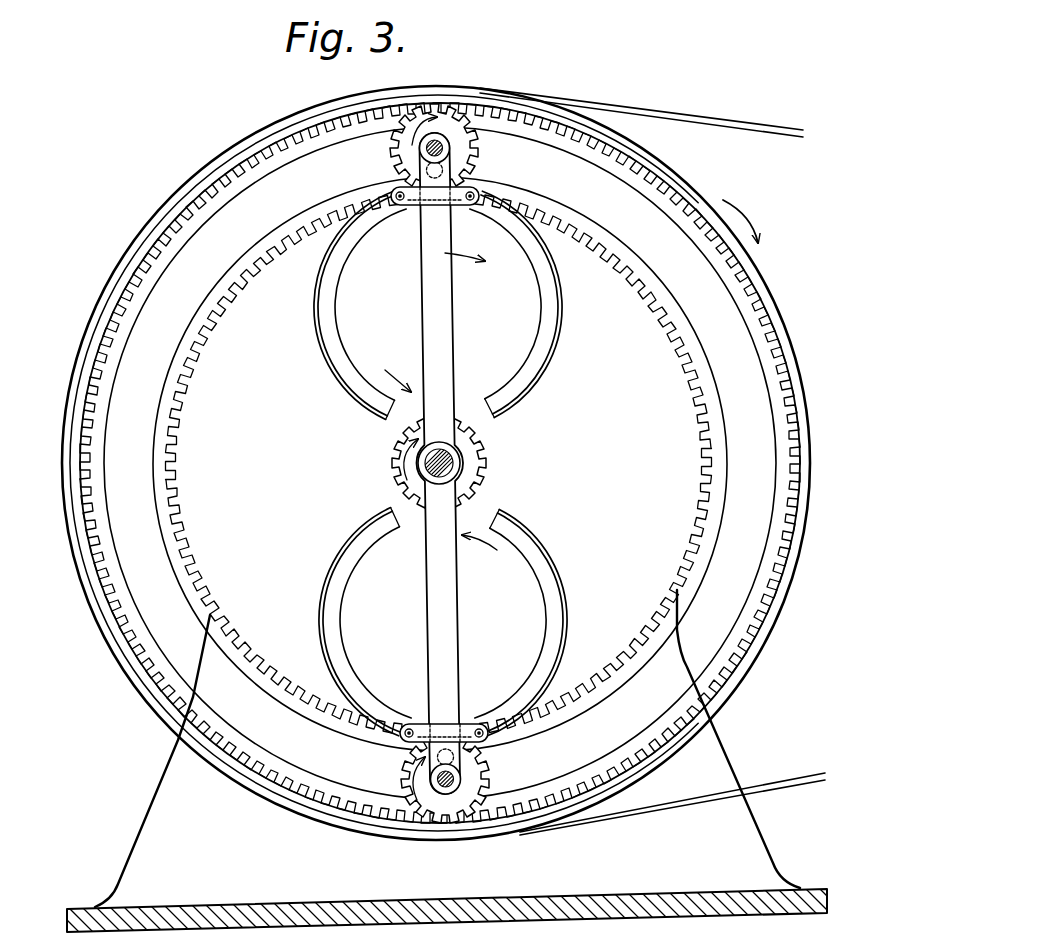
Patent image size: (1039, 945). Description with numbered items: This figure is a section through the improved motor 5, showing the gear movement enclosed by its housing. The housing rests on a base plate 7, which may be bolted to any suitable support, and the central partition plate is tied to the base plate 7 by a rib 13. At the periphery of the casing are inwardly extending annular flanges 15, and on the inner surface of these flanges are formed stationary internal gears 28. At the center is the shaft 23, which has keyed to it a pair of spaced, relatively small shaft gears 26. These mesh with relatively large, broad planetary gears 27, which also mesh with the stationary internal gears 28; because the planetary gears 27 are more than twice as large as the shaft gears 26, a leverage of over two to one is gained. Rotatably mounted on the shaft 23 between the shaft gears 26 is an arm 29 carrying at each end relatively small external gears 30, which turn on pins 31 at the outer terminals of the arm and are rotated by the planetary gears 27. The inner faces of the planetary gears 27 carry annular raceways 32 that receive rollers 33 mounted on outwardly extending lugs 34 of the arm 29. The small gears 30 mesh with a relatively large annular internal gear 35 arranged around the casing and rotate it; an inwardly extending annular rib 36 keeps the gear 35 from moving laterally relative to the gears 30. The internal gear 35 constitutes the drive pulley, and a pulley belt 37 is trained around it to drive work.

The improved motor 5 is at (647, 227).
The base plate 7 is at (645, 903).
The rib 13 is at (742, 823).
The annular flanges 15 is at (703, 360).
The shaft 23 is at (453, 468).
The shaft gears 26 is at (470, 436).
The planetary gears 27 is at (512, 333).
The stationary internal gears 28 is at (697, 380).
The arm 29 is at (448, 267).
The external gears 30 is at (465, 153).
The pins 31 is at (428, 150).
The annular raceways 32 is at (547, 278).
The rollers 33 is at (401, 208).
The lugs 34 is at (415, 207).
The annular internal gear 35 is at (623, 147).
The annular rib 36 is at (612, 157).
The pulley belt 37 is at (603, 102).